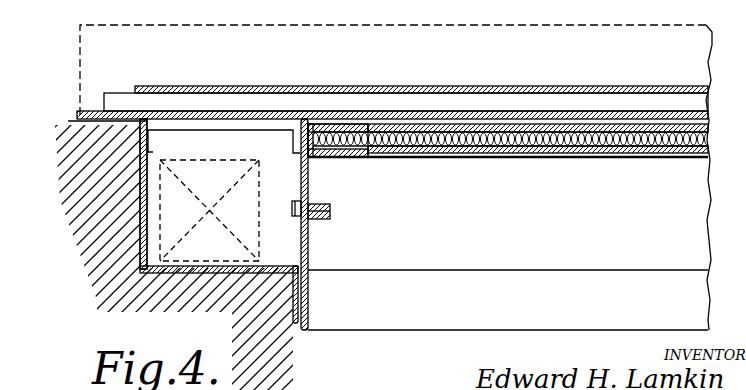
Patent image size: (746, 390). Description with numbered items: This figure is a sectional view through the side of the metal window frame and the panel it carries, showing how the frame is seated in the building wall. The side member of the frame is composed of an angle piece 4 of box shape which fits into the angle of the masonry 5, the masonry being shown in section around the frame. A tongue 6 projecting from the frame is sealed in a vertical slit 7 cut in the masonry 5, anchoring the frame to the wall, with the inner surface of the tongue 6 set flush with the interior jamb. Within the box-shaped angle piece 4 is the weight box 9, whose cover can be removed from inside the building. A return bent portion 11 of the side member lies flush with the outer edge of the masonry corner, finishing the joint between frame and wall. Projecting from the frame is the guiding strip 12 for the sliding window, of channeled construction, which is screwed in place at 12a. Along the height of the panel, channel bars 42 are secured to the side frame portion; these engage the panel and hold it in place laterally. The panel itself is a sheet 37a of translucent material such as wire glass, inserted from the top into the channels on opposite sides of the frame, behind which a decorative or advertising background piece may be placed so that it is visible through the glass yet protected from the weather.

The angle pieces 4 is at (182, 224).
The masonry 5 is at (182, 282).
The tongue 6 is at (88, 128).
The vertical slit 7 is at (77, 117).
The weight box 9 is at (140, 239).
The return bent portion 11 is at (308, 298).
The guiding strip 12 is at (308, 182).
The screw 12a is at (297, 203).
The sheet of wire glass 37a is at (553, 128).
The channel bars 42 is at (362, 157).